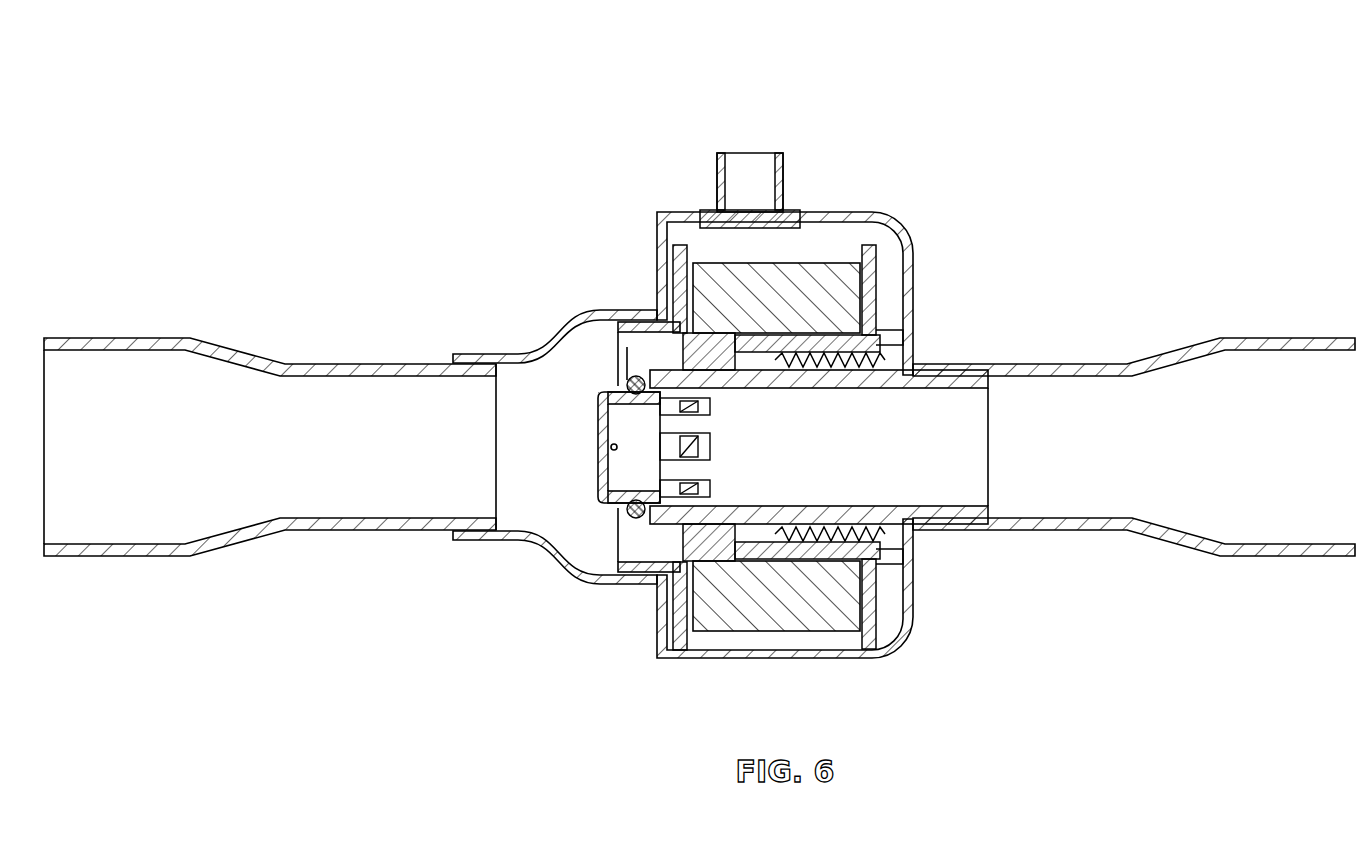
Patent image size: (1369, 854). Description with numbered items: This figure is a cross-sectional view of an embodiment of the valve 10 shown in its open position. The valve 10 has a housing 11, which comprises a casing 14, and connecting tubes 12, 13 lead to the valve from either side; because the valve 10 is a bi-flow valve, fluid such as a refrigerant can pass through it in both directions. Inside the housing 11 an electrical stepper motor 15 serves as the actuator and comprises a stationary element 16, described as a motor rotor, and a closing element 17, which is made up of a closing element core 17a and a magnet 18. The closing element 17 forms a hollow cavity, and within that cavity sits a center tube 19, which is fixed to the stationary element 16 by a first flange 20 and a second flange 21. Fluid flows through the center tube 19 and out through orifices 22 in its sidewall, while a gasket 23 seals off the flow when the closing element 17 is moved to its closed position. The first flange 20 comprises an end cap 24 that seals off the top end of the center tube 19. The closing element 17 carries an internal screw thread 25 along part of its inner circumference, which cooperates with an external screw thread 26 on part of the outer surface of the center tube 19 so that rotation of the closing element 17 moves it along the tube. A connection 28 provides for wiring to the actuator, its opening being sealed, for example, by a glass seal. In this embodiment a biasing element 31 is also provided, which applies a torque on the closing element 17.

The valve 10 is at (1076, 94).
The housing 11 is at (897, 223).
The connecting tube 12 is at (167, 338).
The connecting tube 13 is at (1273, 338).
The casing 14 is at (658, 250).
The electrical stepper motor 15 is at (819, 243).
The stationary element 16 is at (893, 650).
The closing element 17 is at (735, 556).
The closing element core 17a is at (648, 579).
The magnet 18 is at (814, 543).
The center tube 19 is at (939, 378).
The first flange 20 is at (676, 620).
The second flange 21 is at (903, 572).
The orifices 22 is at (676, 452).
The gasket 23 is at (628, 383).
The end cap 24 is at (600, 447).
The internal screw thread 25 is at (860, 526).
The external screw thread 26 is at (793, 560).
The connection 28 is at (751, 150).
The biasing element 31 is at (888, 376).